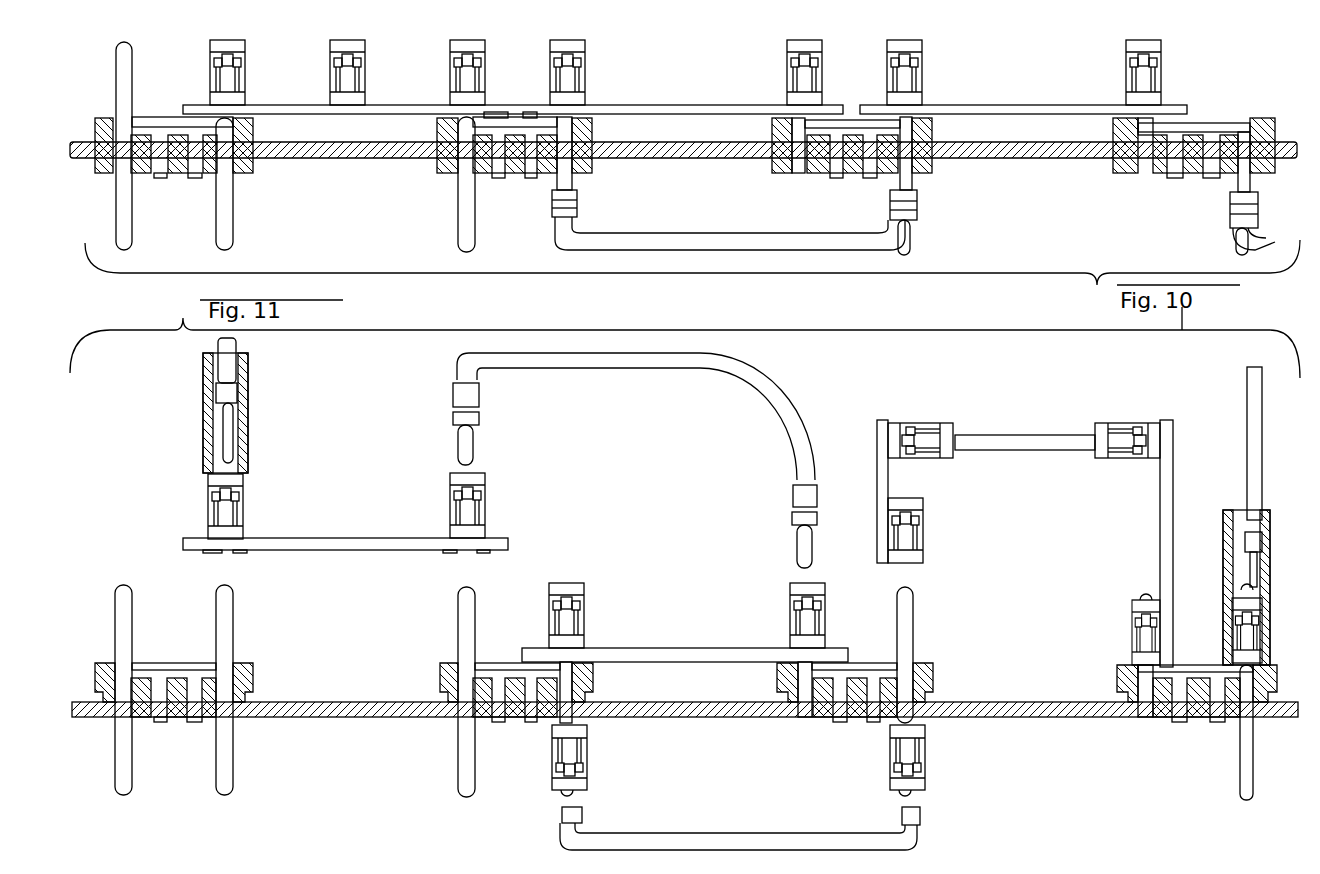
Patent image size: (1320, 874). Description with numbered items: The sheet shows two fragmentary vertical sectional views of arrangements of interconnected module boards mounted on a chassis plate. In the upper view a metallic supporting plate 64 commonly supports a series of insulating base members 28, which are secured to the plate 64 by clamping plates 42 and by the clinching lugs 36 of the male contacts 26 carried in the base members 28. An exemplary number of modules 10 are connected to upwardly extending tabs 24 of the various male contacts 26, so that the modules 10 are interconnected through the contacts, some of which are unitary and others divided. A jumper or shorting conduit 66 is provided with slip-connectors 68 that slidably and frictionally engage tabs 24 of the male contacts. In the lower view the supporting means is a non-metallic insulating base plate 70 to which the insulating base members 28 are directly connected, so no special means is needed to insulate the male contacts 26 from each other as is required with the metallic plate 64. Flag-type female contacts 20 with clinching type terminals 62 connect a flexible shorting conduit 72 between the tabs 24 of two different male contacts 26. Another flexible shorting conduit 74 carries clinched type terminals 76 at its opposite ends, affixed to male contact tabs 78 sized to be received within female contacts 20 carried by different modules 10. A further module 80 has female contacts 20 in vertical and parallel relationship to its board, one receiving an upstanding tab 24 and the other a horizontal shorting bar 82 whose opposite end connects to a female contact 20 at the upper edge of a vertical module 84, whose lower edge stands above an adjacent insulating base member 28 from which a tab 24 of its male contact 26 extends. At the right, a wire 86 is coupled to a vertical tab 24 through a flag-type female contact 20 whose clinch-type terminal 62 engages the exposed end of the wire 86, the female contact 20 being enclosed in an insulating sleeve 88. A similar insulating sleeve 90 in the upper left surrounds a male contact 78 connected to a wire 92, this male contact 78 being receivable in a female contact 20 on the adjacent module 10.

In FIG. 10, the module 10 is at (288, 105).
In FIG. 11, the module 10 is at (368, 538).
In FIG. 10, the female contact 20 is at (248, 44).
In FIG. 11, the female contact 20 is at (242, 530).
In FIG. 10, the tab 24 is at (132, 76).
In FIG. 11, the tab 24 is at (130, 605).
In FIG. 10, the male contact 26 is at (165, 117).
In FIG. 11, the male contact 26 is at (175, 663).
In FIG. 10, the insulating base member 28 is at (592, 131).
In FIG. 11, the insulating base member 28 is at (253, 673).
In FIG. 10, the clinching lug 36 is at (195, 178).
In FIG. 10, the clamping plate 42 is at (100, 173).
In FIG. 11, the clinching type terminal 62 is at (582, 816).
In FIG. 10, the metallic supporting plate 64 is at (348, 158).
In FIG. 10, the shorting conduit 66 is at (665, 233).
In FIG. 10, the slip-connector 68 is at (552, 206).
In FIG. 11, the insulating base plate 70 is at (330, 717).
In FIG. 11, the flexible shorting conduit 72 is at (735, 833).
In FIG. 11, the flexible shorting conduit 74 is at (640, 368).
In FIG. 11, the clinched type terminal 76 is at (237, 394).
In FIG. 11, the male contact tab 78 is at (233, 451).
In FIG. 11, the module 80 is at (877, 463).
In FIG. 11, the horizontal shorting bar 82 is at (1035, 435).
In FIG. 11, the vertical module 84 is at (1160, 489).
In FIG. 11, the wire 86 is at (1247, 433).
In FIG. 11, the insulating sleeve 88 is at (1223, 586).
In FIG. 11, the insulating sleeve 90 is at (248, 361).
In FIG. 11, the wire 92 is at (218, 361).